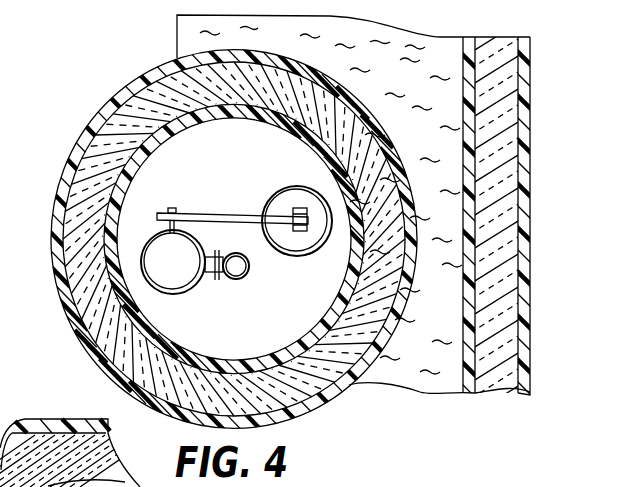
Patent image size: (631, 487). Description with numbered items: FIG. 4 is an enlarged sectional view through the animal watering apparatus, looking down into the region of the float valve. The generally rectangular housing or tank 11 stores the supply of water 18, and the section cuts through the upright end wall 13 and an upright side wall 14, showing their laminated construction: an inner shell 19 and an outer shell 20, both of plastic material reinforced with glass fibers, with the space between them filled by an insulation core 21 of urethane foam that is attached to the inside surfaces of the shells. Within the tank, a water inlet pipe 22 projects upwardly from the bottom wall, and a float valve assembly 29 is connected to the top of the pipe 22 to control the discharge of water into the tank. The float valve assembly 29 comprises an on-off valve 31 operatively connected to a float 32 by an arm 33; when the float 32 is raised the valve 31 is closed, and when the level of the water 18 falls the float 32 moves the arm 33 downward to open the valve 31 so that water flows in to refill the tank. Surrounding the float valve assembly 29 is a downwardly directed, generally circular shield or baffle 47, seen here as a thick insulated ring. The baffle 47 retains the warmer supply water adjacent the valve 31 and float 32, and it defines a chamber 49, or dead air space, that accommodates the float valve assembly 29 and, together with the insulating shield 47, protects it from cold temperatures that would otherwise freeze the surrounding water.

The housing or tank 11 is at (545, 167).
The end wall 13 is at (531, 233).
The side wall 14 is at (68, 418).
The water 18 is at (448, 268).
The inner shell 19 is at (463, 81).
The outer shell 20 is at (530, 71).
The insulation core 21 is at (500, 96).
The water inlet pipe 22 is at (248, 268).
The float valve assembly 29 is at (250, 187).
The on-off valve 31 is at (177, 278).
The float 32 is at (305, 241).
The arm 33 is at (222, 213).
The shield or baffle 47 is at (84, 131).
The chamber 49 is at (234, 239).